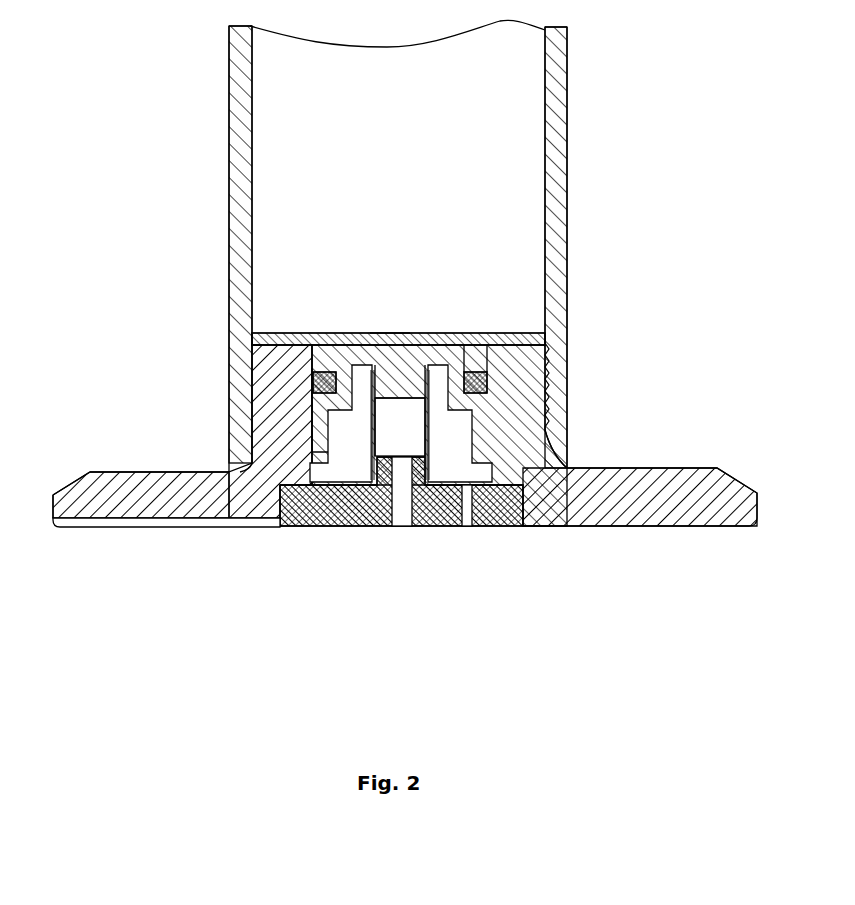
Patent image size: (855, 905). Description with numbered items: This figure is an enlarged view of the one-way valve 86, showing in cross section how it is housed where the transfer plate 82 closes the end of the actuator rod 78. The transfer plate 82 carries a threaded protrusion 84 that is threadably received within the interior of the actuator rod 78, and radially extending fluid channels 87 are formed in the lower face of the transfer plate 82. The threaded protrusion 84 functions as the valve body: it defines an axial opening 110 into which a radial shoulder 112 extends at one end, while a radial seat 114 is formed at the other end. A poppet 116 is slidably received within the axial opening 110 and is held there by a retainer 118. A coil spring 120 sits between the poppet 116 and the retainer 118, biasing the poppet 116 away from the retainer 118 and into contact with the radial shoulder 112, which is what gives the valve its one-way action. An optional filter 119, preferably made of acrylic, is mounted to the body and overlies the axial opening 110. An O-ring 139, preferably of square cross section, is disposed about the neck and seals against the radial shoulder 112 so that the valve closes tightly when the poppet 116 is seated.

The actuator rod 78 is at (229, 130).
The transfer plate 82 is at (76, 478).
The threaded protrusion 84 is at (252, 362).
The one-way valve 86 is at (390, 318).
The fluid channels 87 is at (128, 523).
The axial opening 110 is at (447, 430).
The radial shoulder 112 is at (475, 333).
The radial seat 114 is at (568, 417).
The poppet 116 is at (367, 343).
The retainer 118 is at (350, 527).
The filter 119 is at (283, 333).
The coil spring 120 is at (445, 460).
The O-ring 139 is at (546, 352).